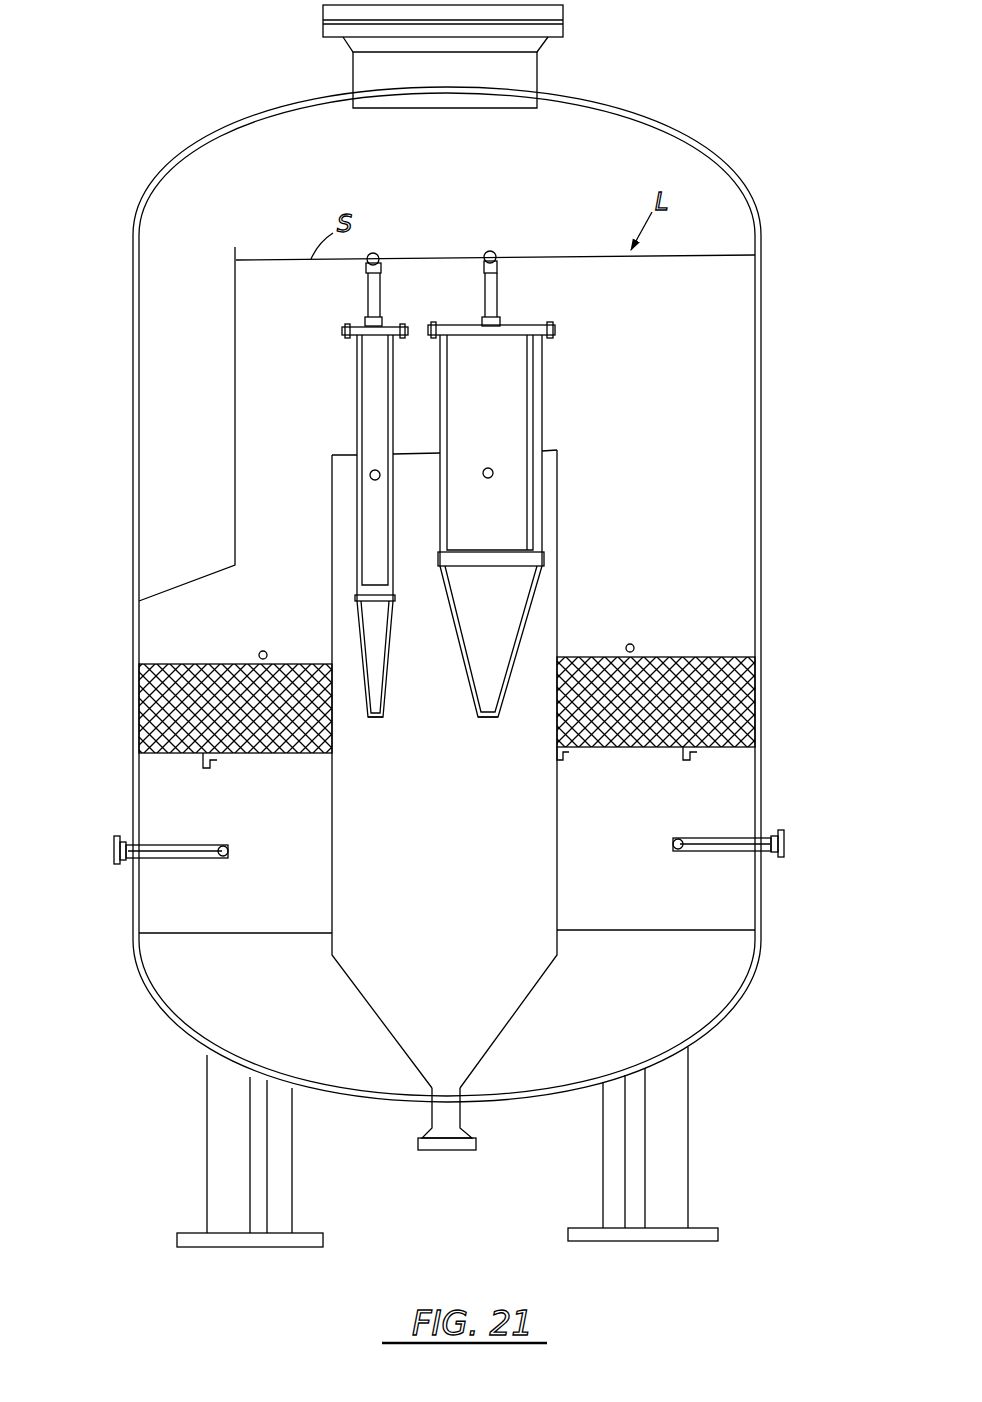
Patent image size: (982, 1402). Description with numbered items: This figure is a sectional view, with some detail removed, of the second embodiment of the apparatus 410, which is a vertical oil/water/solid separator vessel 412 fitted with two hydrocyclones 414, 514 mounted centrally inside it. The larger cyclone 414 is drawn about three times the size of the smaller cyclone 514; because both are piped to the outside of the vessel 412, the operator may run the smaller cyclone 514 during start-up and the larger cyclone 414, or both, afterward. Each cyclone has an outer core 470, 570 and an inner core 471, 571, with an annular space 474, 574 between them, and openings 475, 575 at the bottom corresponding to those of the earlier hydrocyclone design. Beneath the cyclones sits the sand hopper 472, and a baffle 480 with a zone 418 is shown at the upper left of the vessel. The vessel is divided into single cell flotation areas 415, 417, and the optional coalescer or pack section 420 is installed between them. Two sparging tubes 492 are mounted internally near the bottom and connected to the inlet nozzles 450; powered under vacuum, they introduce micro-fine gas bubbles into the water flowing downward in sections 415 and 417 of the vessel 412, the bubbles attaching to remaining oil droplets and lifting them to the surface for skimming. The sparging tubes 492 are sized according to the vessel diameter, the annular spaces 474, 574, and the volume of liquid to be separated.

The apparatus of the second embodiment 410 is at (665, 105).
The vertical oil/water/solid separator vessel 412 is at (764, 492).
The hydrocyclone 414 is at (558, 507).
The single cell flotation area 415 is at (262, 633).
The single cell flotation area 417 is at (275, 814).
The inlet zone 418 is at (205, 248).
The coalescer or pack section 420 is at (758, 688).
The inlet nozzle 450 is at (122, 864).
The outer core 470 is at (541, 410).
The inner core 471 is at (452, 420).
The sand hopper 472 is at (558, 862).
The annular space 474 is at (534, 376).
The openings 475 is at (487, 720).
The baffle 480 is at (237, 530).
The sparging tube 492 is at (178, 862).
The hydrocyclone 514 is at (359, 508).
The outer core 570 is at (357, 402).
The inner core 571 is at (380, 408).
The annular space 574 is at (358, 432).
The openings 575 is at (377, 720).